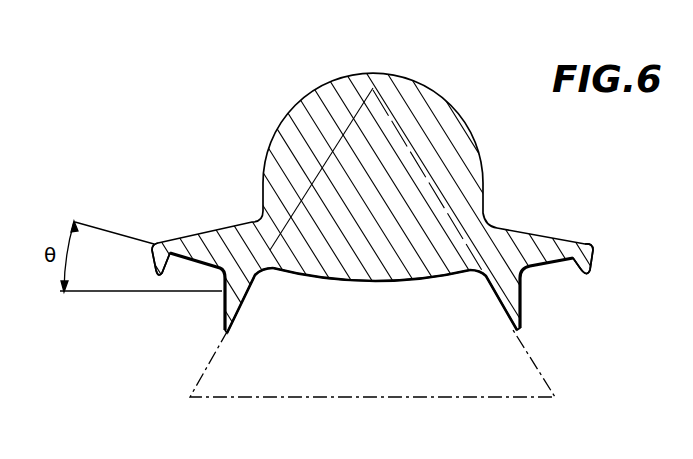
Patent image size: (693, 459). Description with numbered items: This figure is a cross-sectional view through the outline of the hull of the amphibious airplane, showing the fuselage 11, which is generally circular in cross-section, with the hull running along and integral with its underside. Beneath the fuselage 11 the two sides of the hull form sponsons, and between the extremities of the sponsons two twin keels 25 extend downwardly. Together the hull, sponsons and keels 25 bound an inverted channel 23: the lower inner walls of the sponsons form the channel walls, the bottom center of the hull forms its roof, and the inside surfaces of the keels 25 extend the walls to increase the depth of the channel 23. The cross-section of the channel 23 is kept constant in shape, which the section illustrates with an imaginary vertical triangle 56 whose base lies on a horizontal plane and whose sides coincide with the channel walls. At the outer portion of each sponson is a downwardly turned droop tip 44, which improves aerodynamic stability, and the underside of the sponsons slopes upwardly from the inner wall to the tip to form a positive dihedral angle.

The fuselage 11 is at (289, 111).
The inverted channel 23 is at (381, 316).
The twin keels 25 is at (223, 315).
The droop tip 44 is at (154, 267).
The vertical triangle 56 is at (550, 388).